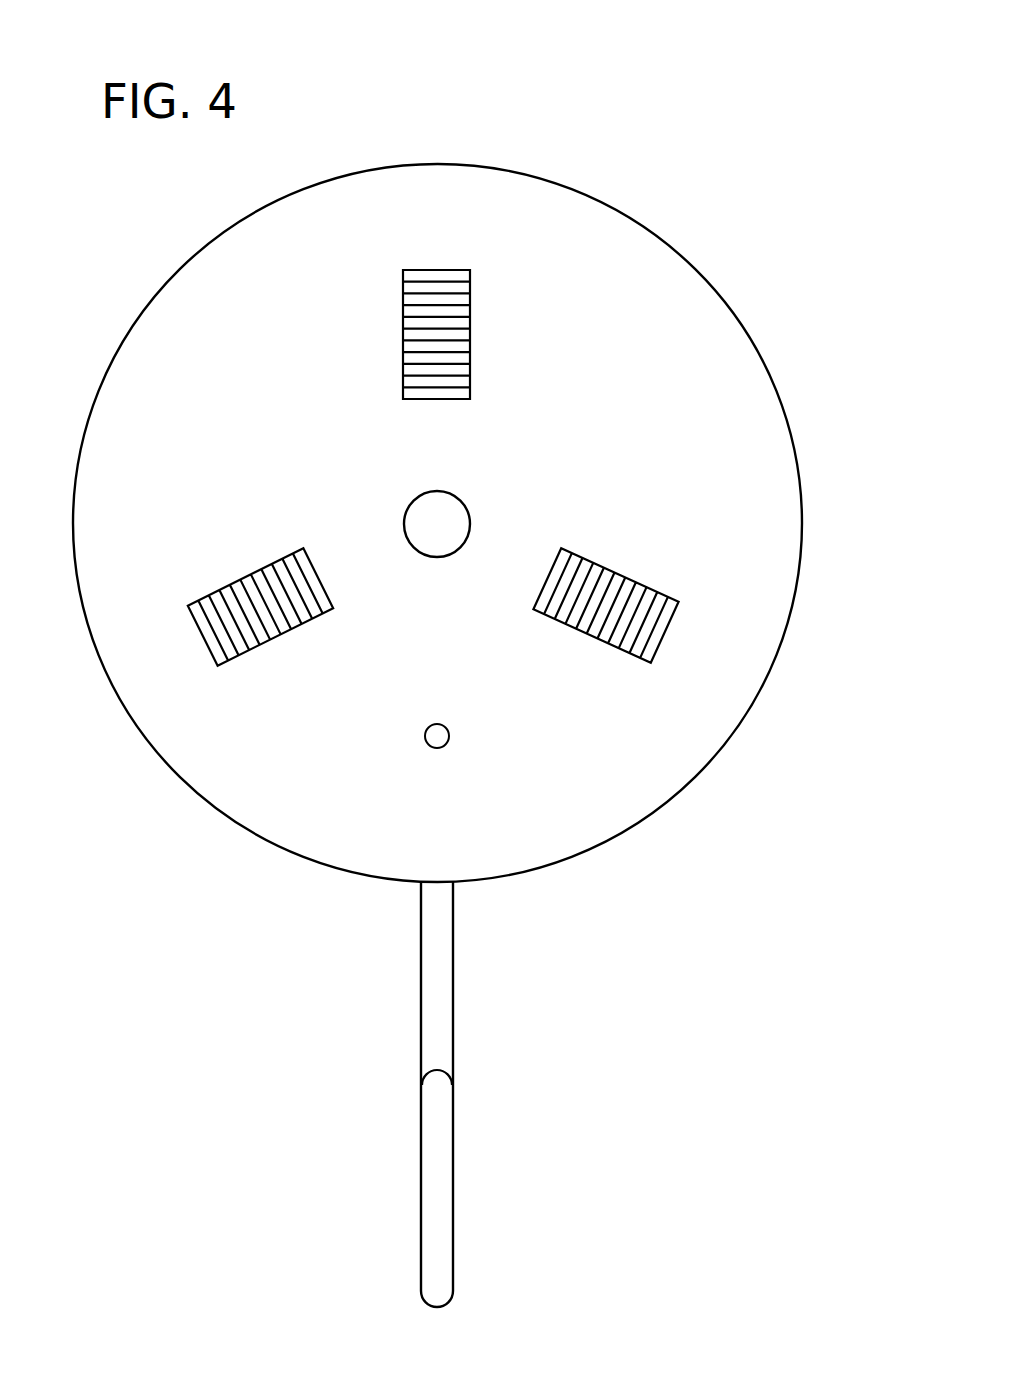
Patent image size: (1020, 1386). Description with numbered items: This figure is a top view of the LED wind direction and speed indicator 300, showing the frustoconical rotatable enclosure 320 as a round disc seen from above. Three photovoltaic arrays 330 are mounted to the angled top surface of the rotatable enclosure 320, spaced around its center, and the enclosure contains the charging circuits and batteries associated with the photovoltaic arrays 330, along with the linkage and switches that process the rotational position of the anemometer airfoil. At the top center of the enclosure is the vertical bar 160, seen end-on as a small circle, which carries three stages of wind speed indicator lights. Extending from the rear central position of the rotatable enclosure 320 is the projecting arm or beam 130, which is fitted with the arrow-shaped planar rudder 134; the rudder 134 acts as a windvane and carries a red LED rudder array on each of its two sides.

The LED wind direction and speed indicator 300 is at (580, 60).
The rotatable enclosure 320 is at (648, 217).
The photovoltaic arrays 330 is at (474, 361).
The vertical bar 160 is at (450, 494).
The projecting arm or beam 130 is at (458, 978).
The rudder 134 is at (460, 1167).